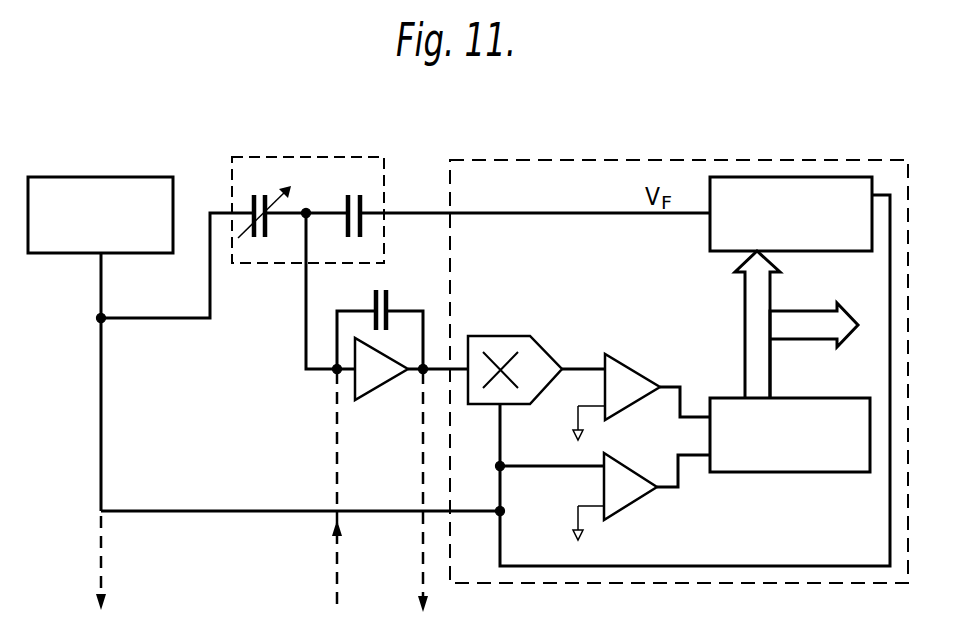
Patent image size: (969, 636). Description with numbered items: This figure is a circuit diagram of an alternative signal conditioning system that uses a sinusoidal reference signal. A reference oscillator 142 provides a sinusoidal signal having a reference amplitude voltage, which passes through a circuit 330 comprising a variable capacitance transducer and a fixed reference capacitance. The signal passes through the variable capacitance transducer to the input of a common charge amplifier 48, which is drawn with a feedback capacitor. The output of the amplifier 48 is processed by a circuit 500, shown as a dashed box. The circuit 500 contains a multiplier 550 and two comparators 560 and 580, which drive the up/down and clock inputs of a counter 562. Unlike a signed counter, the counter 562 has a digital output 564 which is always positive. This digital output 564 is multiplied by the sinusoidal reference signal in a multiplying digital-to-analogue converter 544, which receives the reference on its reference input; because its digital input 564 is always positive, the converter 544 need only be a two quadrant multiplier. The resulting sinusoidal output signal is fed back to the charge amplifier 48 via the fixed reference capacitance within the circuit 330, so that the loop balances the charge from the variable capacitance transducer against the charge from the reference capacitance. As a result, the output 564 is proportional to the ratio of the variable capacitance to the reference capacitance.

The reference oscillator 142 is at (152, 177).
The circuit 330 is at (328, 157).
The circuit 500 is at (848, 160).
The charge amplifier 48 is at (386, 400).
The multiplier 550 is at (489, 336).
The comparator 560 is at (636, 372).
The comparator 580 is at (640, 498).
The counter 562 is at (825, 473).
The multiplying digital-to-analogue converter 544 is at (710, 231).
The digital output 564 is at (805, 311).